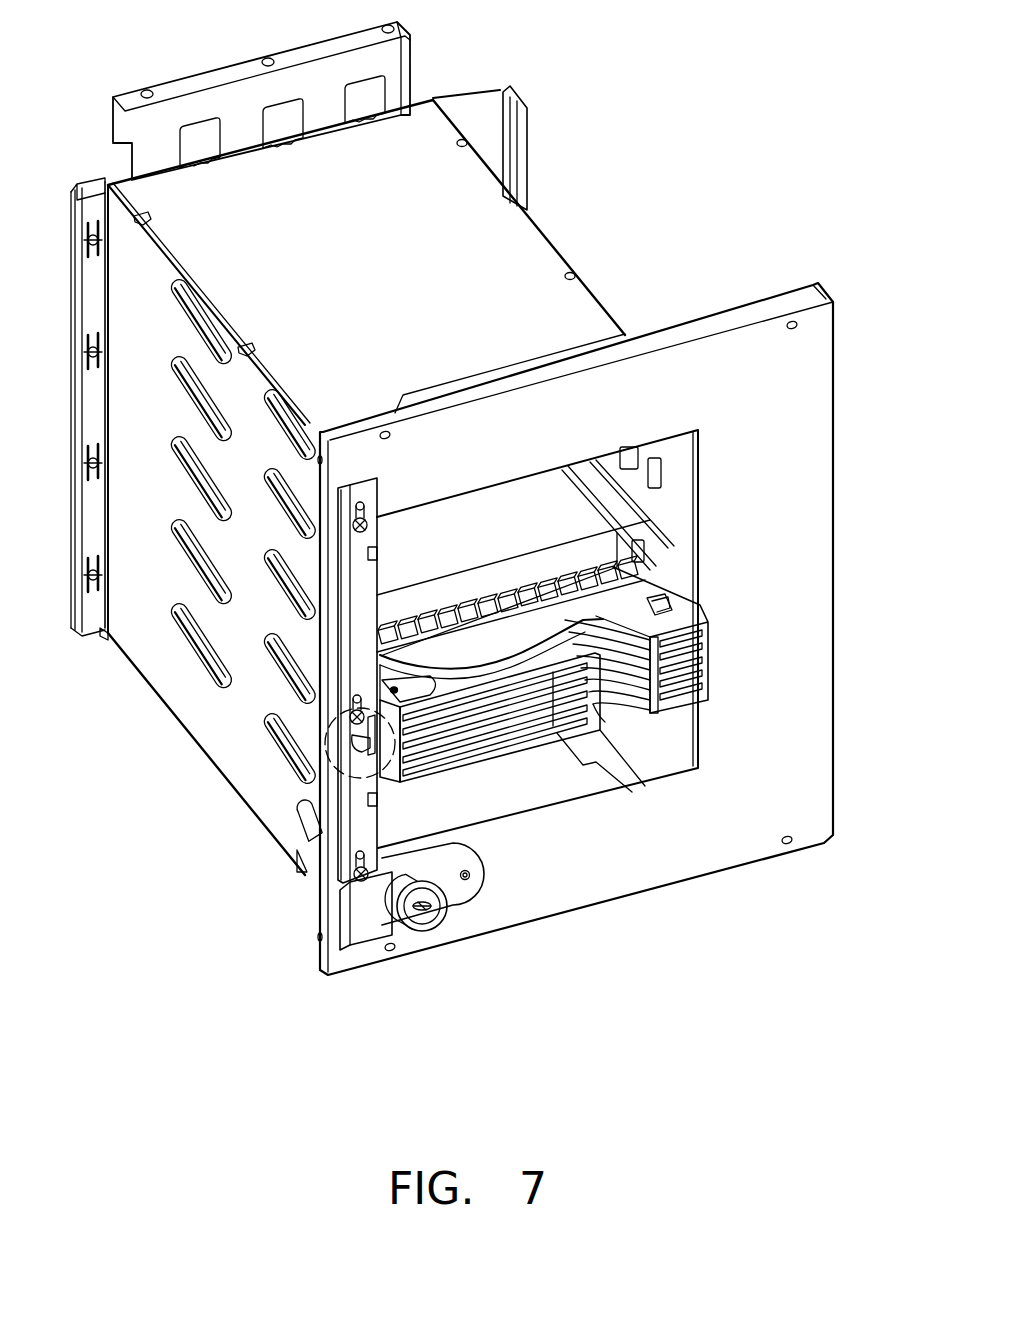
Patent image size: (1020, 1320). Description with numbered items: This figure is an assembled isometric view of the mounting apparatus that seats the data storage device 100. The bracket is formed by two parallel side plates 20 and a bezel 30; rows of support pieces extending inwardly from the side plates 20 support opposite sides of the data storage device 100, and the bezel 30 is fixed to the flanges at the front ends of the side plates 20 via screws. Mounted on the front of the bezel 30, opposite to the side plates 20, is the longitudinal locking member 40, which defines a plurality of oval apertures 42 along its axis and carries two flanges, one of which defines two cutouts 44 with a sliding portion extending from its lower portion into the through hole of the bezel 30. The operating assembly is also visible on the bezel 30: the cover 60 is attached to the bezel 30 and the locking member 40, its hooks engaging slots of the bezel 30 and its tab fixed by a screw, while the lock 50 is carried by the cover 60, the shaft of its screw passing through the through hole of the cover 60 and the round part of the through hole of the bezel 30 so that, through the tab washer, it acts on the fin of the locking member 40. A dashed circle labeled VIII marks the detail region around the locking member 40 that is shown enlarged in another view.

The side plate 20 is at (372, 448).
The bezel 30 is at (770, 470).
The locking member 40 is at (357, 815).
The oval aperture 42 is at (352, 699).
The cutout 44 is at (385, 633).
The lock 50 is at (428, 922).
The cover 60 is at (360, 930).
The data storage device 100 is at (660, 592).
The detail view circle VIII is at (323, 740).